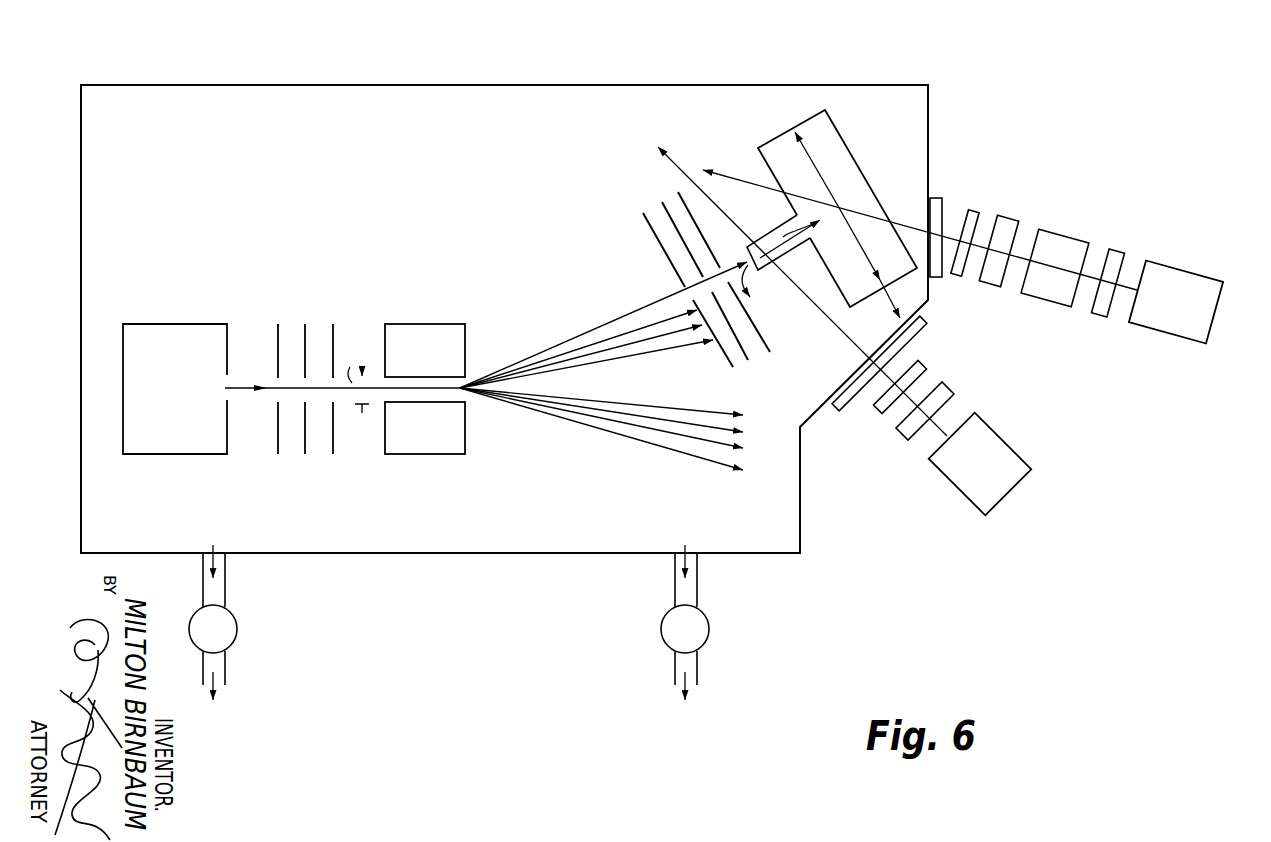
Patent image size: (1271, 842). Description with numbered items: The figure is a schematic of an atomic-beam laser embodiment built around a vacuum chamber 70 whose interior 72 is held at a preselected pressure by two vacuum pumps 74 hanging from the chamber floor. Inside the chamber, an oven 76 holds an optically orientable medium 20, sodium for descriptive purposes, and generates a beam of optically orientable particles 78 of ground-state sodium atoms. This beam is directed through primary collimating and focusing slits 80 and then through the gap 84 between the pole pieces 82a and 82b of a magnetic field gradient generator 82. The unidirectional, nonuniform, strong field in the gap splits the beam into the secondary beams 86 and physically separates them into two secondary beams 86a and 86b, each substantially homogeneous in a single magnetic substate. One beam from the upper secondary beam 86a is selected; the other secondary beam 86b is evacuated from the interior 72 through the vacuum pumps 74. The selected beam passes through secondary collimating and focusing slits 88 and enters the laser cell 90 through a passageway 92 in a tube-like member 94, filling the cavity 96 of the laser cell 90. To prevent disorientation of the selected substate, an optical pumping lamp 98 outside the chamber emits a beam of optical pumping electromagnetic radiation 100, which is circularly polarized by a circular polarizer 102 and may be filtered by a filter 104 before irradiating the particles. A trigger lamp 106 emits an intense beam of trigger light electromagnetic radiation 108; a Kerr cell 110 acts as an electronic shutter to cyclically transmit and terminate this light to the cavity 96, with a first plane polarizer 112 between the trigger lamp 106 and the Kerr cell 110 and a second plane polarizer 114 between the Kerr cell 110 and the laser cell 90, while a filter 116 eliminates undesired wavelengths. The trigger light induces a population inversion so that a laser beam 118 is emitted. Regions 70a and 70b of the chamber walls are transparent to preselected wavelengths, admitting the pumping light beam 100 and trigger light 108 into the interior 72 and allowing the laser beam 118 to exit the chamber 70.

The optically orientable medium 20 is at (190, 390).
The vacuum chamber 70 is at (420, 62).
The transparent region of chamber wall 70a is at (933, 197).
The transparent region of chamber wall 70b is at (925, 321).
The interior of chamber 72 is at (378, 514).
The vacuum pumps 74 is at (246, 609).
The oven 76 is at (176, 455).
The beam of optically orientable particles 78 is at (257, 385).
The primary collimating and focusing slits 80 is at (332, 327).
The magnetic field gradient generator 82 is at (453, 358).
The pole piece 82a is at (418, 320).
The pole piece 82b is at (413, 455).
The gap 84 is at (358, 377).
The secondary beams 86 is at (603, 371).
The secondary beam 86a is at (505, 374).
The secondary beam 86b is at (708, 462).
The secondary collimating and focusing slits 88 is at (737, 366).
The laser cell 90 is at (818, 70).
The passageway 92 is at (801, 246).
The tube-like member 94 is at (787, 220).
The cavity 96 is at (853, 176).
The optical pumping lamp 98 is at (1018, 430).
The beam of optical pumping electromagnetic radiation 100 is at (857, 339).
The circular polarizer 102 is at (905, 490).
The filter 104 is at (923, 366).
The trigger lamp 106 is at (1172, 334).
The trigger light electromagnetic radiation 108 is at (725, 168).
The Kerr cell 110 is at (1065, 306).
The first plane polarizer 112 is at (1106, 318).
The second plane polarizer 114 is at (993, 288).
The filter 116 is at (952, 276).
The laser beam 118 is at (887, 292).